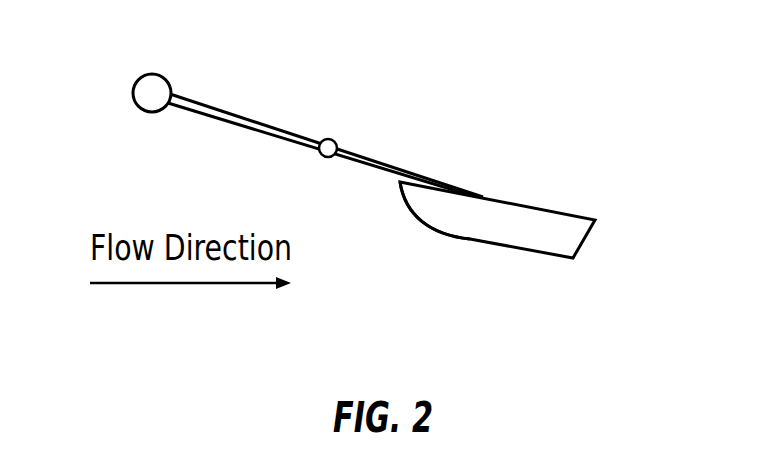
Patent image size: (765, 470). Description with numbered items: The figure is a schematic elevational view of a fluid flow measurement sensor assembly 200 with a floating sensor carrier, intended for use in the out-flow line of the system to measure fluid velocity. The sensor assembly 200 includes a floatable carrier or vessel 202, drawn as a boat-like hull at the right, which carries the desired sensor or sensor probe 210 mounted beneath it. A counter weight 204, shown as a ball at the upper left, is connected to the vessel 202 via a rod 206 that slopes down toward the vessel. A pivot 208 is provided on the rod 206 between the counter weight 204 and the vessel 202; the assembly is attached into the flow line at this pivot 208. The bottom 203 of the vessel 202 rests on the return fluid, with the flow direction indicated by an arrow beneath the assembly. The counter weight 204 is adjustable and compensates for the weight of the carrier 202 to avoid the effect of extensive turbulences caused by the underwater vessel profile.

The sensor assembly 200 is at (602, 30).
The floatable carrier or vessel 202 is at (516, 210).
The bottom of the vessel 203 is at (444, 237).
The counter weight 204 is at (109, 117).
The rod 206 is at (330, 135).
The pivot 208 is at (284, 176).
The sensor probe 210 is at (594, 290).